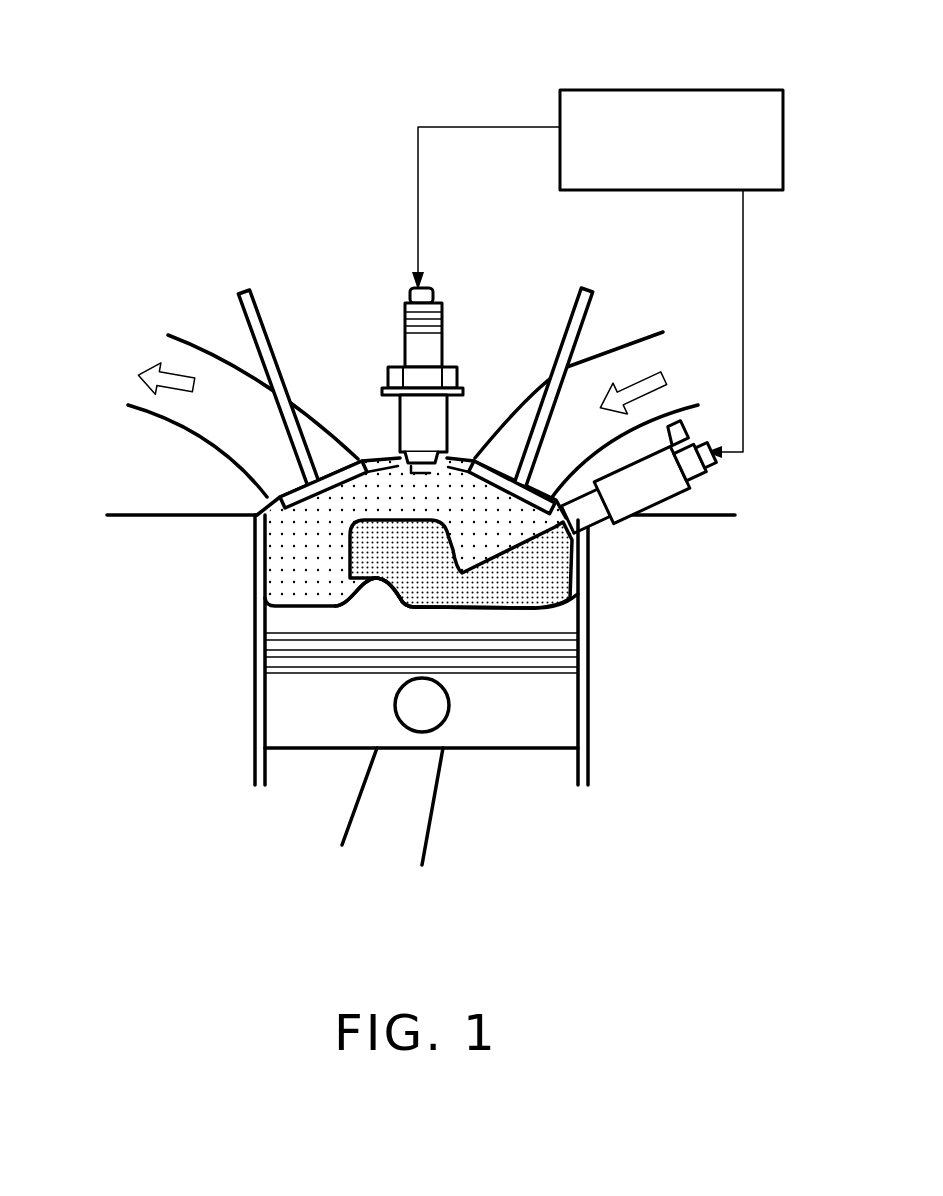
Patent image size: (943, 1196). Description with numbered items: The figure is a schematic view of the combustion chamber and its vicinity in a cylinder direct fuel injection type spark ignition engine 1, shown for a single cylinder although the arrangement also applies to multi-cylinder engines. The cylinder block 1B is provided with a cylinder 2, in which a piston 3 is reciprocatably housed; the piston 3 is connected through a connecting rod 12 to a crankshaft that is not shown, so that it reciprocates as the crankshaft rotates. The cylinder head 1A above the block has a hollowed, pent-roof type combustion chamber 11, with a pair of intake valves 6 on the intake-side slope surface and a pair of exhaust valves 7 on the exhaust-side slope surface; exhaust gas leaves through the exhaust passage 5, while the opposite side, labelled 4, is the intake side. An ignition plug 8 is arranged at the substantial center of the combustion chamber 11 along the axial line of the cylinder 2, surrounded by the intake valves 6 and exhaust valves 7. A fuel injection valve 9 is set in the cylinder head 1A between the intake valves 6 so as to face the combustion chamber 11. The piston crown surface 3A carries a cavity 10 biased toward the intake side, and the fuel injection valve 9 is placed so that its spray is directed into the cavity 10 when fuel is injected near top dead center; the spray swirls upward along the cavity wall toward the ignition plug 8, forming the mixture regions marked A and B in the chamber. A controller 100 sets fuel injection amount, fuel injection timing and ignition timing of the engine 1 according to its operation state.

The cylinder direct fuel injection type spark ignition engine 1 is at (220, 248).
The cylinder head 1A is at (116, 472).
The cylinder block 1B is at (116, 592).
The cylinder 2 is at (253, 705).
The piston 3 is at (473, 730).
The piston crown surface 3A is at (532, 615).
The intake port 4 is at (635, 353).
The exhaust passage 5 is at (200, 348).
The intake valve 6 is at (568, 317).
The exhaust valve 7 is at (252, 300).
The ignition plug 8 is at (395, 350).
The fuel injection valve 9 is at (627, 503).
The cavity 10 is at (412, 608).
The combustion chamber 11 is at (390, 462).
The connecting rod 12 is at (412, 807).
The controller 100 is at (588, 107).
The lean mixture region A is at (295, 572).
The rich mixture region B is at (393, 549).